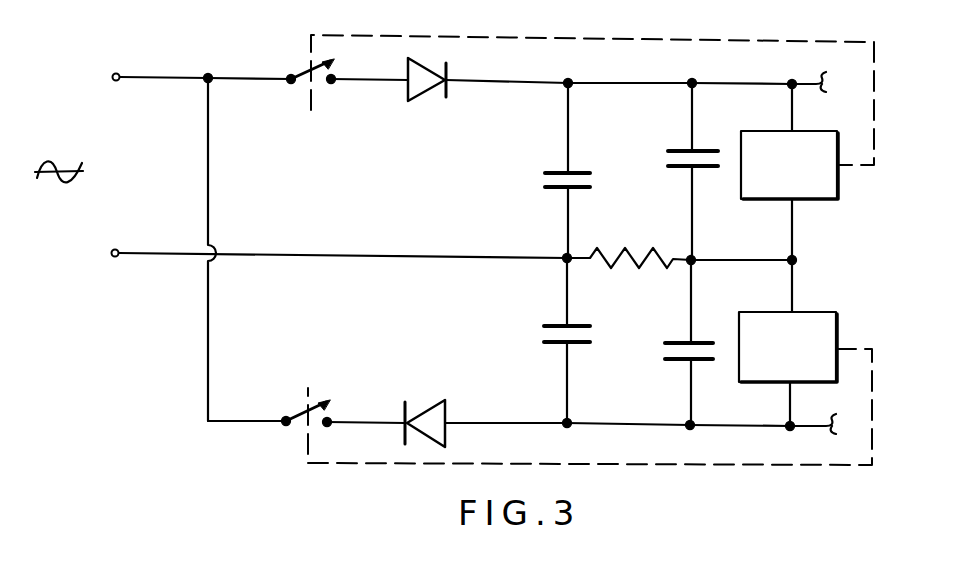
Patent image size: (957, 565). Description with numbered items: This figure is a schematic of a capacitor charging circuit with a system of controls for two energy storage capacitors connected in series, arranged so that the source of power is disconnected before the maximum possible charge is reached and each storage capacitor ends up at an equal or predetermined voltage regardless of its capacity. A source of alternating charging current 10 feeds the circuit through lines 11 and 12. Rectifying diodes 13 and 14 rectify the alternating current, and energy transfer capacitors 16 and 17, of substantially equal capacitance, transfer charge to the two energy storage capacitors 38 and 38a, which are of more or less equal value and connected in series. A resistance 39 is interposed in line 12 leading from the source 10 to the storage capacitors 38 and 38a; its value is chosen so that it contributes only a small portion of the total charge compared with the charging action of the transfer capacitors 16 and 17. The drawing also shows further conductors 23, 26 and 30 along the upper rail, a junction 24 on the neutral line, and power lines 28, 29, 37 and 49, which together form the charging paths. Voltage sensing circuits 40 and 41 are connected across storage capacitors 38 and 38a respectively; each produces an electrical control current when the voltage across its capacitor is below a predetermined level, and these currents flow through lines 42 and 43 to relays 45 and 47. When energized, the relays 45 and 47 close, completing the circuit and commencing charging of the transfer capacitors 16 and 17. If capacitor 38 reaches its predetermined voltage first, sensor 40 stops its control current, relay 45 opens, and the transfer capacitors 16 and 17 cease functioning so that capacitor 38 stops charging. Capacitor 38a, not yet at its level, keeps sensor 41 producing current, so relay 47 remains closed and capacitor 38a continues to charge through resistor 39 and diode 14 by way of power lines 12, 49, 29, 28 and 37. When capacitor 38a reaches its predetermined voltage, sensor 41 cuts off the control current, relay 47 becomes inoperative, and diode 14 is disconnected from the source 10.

The source of alternating charging current 10 is at (59, 186).
The line 11 is at (183, 77).
The line 12 is at (161, 252).
The rectifying diode 13 is at (425, 98).
The rectifying diode 14 is at (427, 406).
The energy transfer capacitor 16 is at (543, 178).
The energy transfer capacitor 17 is at (543, 332).
The conductor 23 is at (522, 80).
The junction 24 is at (567, 229).
The conductor 26 is at (657, 80).
The power line 28 is at (617, 427).
The power line 29 is at (722, 428).
The conductor 30 is at (767, 80).
The power line 37 is at (207, 354).
The energy storage capacitor 38 is at (667, 152).
The energy storage capacitor 38a is at (675, 348).
The resistance 39 is at (653, 249).
The voltage sensing circuit 40 is at (813, 130).
The voltage sensing circuit 41 is at (836, 325).
The line 42 is at (873, 440).
The line 43 is at (640, 38).
The relay 45 is at (318, 73).
The relay 47 is at (300, 418).
The power line 49 is at (753, 259).